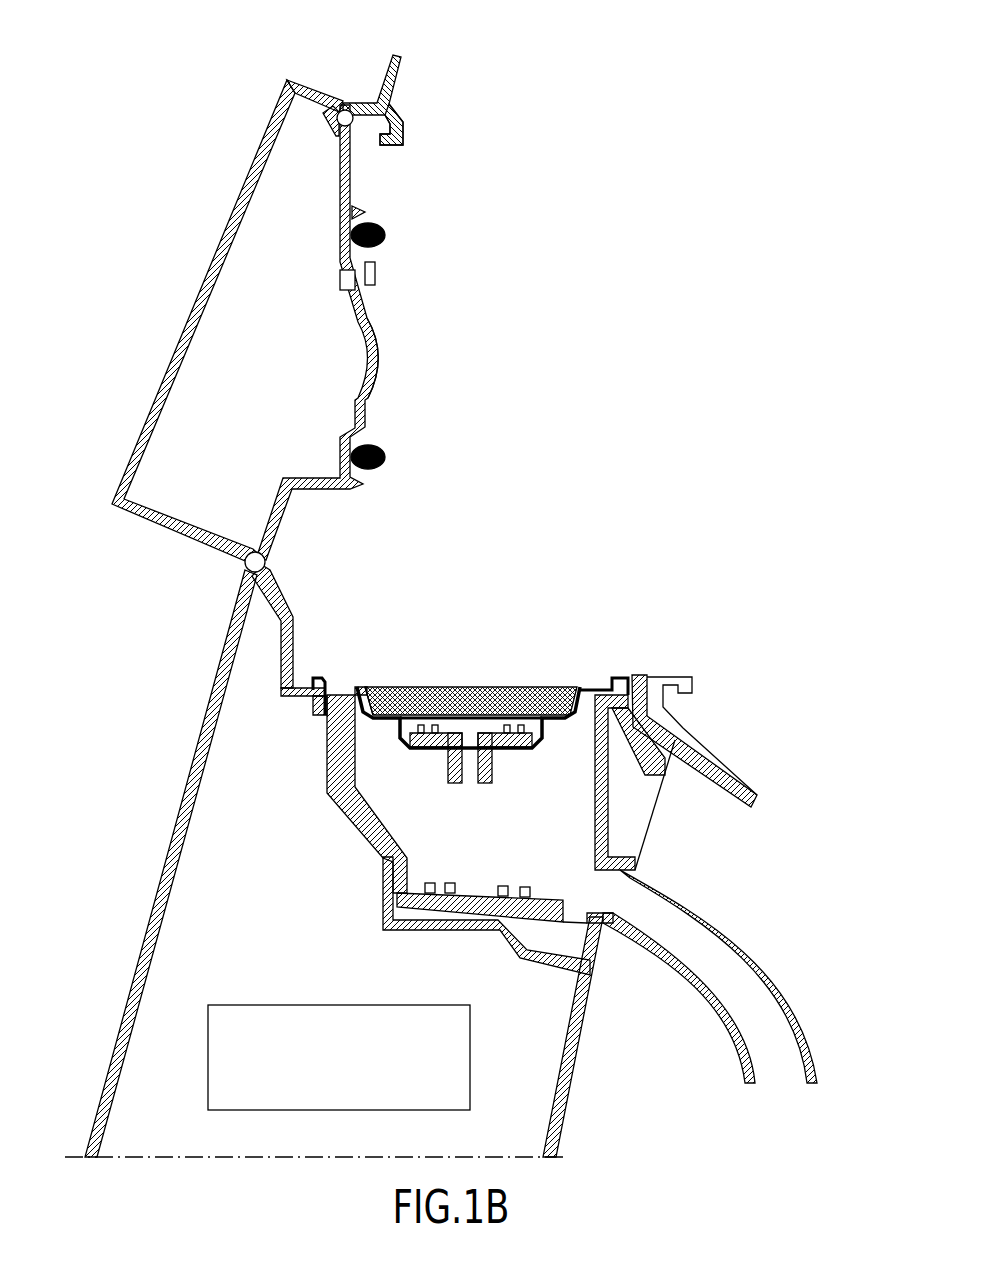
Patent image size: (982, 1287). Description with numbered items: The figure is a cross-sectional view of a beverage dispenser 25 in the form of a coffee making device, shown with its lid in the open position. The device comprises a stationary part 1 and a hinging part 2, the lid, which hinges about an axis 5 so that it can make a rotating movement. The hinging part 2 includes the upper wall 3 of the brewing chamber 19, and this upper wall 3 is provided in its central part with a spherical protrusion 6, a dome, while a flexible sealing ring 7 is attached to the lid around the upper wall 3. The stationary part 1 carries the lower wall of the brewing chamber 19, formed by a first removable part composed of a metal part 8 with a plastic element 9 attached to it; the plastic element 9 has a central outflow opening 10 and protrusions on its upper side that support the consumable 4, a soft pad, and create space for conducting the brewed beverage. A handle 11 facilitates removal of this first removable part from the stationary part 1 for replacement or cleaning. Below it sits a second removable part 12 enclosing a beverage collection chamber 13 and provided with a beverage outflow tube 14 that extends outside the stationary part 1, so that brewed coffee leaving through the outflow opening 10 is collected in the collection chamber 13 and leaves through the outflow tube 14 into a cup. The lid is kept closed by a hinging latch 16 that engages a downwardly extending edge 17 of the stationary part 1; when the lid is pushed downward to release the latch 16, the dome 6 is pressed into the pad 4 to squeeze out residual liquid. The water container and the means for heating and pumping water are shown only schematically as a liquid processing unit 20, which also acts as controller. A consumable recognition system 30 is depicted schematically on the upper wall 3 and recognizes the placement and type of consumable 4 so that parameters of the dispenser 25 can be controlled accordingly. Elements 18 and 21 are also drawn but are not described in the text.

The stationary part 1 is at (143, 947).
The hinging part 2 is at (205, 285).
The upper wall 3 is at (365, 413).
The consumable 4 is at (473, 685).
The axis 5 is at (245, 565).
The spherical protrusion 6 is at (381, 350).
The flexible sealing ring 7 is at (386, 236).
The metal part 8 is at (342, 685).
The plastic element 9 is at (420, 750).
The central outflow opening 10 is at (470, 772).
The handle 11 is at (757, 800).
The second removable part 12 is at (483, 895).
The beverage collection chamber 13 is at (583, 810).
The beverage outflow tube 14 is at (748, 993).
The hinging latch 16 is at (405, 135).
The downwardly extending edge 17 is at (692, 687).
The handle 18 is at (400, 68).
The brewing chamber 19 is at (367, 708).
The liquid processing unit 20 is at (262, 1003).
The piercing element 21 is at (340, 280).
The beverage dispenser 25 is at (662, 131).
The consumable recognition system 30 is at (378, 277).